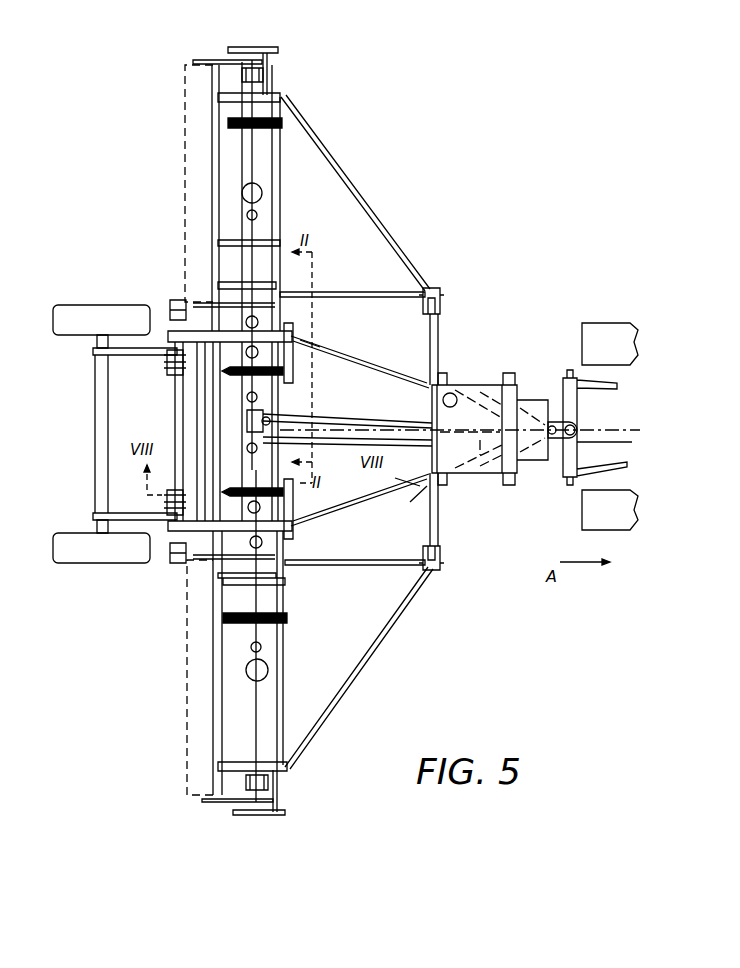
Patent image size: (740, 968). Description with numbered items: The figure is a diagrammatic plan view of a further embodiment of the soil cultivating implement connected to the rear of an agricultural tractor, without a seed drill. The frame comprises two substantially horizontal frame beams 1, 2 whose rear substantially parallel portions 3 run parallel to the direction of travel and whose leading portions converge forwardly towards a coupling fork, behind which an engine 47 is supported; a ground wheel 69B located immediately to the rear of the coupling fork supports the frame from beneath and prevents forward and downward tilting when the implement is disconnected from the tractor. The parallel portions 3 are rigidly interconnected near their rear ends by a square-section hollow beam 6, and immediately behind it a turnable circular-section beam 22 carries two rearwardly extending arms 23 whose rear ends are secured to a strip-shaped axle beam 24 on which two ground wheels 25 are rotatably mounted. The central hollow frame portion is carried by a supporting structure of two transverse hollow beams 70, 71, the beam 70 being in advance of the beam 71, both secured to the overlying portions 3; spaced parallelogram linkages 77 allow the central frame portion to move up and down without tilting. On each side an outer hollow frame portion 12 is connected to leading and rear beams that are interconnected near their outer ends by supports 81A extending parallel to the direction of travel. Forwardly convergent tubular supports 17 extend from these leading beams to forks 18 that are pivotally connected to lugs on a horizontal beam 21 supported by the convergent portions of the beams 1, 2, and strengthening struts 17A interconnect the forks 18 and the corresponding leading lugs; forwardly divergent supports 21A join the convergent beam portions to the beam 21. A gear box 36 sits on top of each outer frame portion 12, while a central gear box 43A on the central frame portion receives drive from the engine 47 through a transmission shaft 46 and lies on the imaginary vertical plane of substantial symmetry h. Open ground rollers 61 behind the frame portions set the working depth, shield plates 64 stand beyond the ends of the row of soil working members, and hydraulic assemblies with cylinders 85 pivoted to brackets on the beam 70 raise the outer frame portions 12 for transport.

The frame beam 1 is at (410, 480).
The frame beam 2 is at (344, 352).
The rear substantially parallel portion 3 is at (170, 326).
The hollow beam 6 is at (183, 399).
The outer hollow frame portion 12 is at (245, 192).
The tubular support 17 is at (340, 168).
The strengthening strut 17A is at (357, 292).
The fork 18 is at (440, 298).
The horizontal beam 21 is at (438, 340).
The forwardly divergent support 21A is at (415, 372).
The horizontal beam 22 is at (167, 380).
The arm 23 is at (96, 354).
The axle beam 24 is at (95, 410).
The ground wheel 25 is at (80, 310).
The gear box 36 is at (262, 192).
The central gear box 43A is at (247, 421).
The transmission shaft 46 is at (346, 416).
The engine 47 is at (490, 385).
The open ground roller 61 is at (185, 182).
The shield plate 64 is at (262, 46).
The ground wheel 69B is at (572, 436).
The frame beam 70 is at (280, 208).
The frame beam 71 is at (213, 230).
The parallelogram linkage 77 is at (225, 125).
The support 81A is at (228, 97).
The cylinder 85 is at (286, 371).
The imaginary vertical plane of substantial symmetry h is at (633, 427).